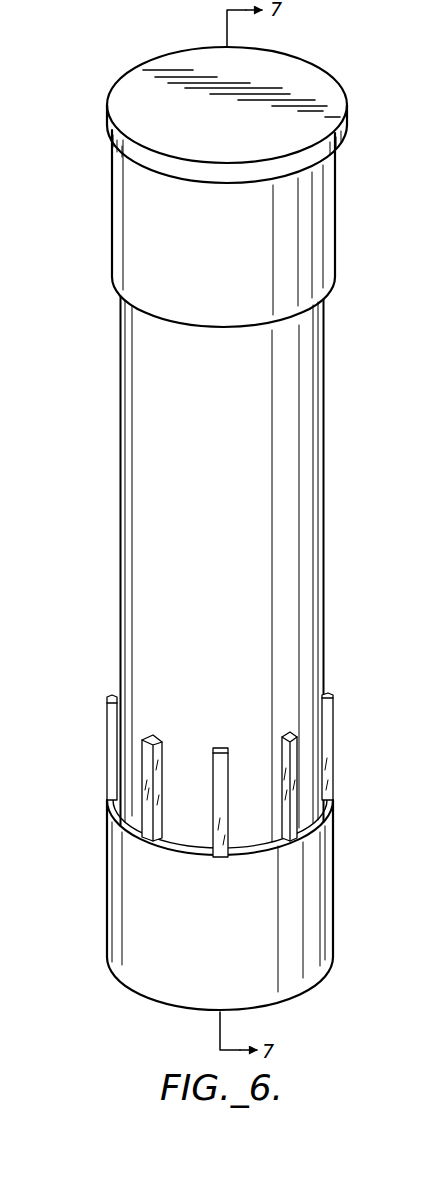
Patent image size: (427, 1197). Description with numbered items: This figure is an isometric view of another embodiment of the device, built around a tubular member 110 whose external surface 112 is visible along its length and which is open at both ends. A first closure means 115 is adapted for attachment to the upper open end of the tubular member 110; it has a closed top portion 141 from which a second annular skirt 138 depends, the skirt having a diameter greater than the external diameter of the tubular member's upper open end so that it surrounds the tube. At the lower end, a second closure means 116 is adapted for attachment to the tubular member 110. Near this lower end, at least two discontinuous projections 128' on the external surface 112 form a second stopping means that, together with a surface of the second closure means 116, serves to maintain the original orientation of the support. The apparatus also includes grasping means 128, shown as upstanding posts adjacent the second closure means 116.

The tubular member 110 is at (326, 467).
The external surface 112 is at (324, 408).
The first closure means 115 is at (338, 75).
The second closure means 116 is at (340, 866).
The grasping means 128 is at (261, 771).
The discontinuous projections 128' is at (372, 746).
The second annular skirt 138 is at (338, 194).
The top portion 141 is at (286, 66).